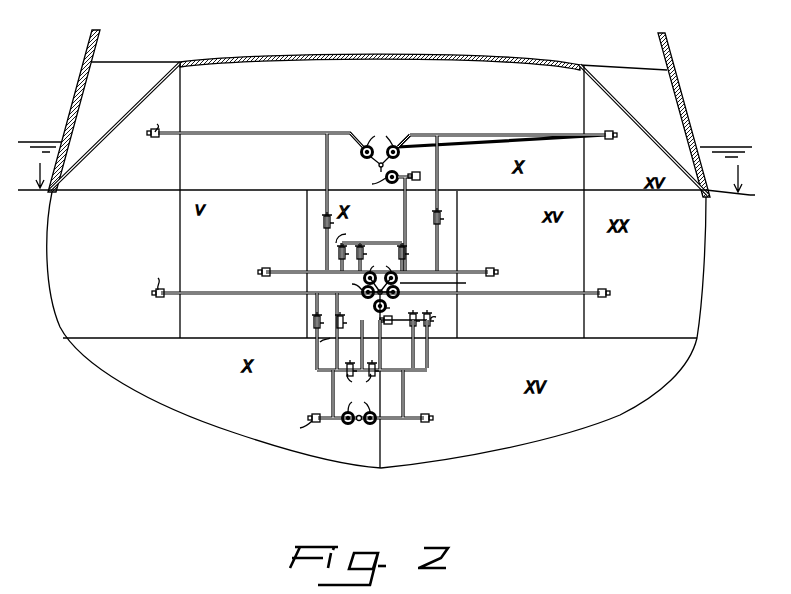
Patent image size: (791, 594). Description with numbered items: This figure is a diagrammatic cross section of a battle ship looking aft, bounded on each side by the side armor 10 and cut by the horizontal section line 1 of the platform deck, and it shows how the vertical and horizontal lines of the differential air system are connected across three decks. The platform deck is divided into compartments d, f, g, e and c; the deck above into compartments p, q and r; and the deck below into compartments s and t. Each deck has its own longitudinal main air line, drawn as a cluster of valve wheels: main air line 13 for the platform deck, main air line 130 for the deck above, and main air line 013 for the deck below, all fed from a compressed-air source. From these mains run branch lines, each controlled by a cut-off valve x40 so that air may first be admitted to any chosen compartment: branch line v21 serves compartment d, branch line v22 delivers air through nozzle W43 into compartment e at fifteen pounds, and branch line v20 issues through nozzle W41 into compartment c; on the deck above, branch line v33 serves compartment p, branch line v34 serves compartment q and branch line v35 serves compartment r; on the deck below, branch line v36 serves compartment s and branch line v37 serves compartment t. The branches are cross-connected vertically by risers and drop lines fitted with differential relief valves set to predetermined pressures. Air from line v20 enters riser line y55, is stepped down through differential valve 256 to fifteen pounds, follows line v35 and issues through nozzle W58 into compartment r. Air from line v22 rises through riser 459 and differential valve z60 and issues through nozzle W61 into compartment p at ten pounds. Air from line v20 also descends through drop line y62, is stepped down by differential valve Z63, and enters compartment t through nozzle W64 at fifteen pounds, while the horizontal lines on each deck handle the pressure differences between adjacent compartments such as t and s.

The side armor 10 is at (86, 70).
The section line 1— 1 is at (389, 174).
The branch line for compartment q v34 is at (236, 133).
The branch line for compartment r v35 is at (474, 134).
The branch line for compartment p v33 is at (397, 172).
The main air line of the deck above 130 is at (379, 167).
The nozzle w61 W61 is at (426, 174).
The nozzle w58 W58 is at (612, 140).
The differential valve z56 256 is at (436, 216).
The riser y59 459 is at (412, 229).
The differential valve z60 is at (398, 256).
The cut-off valve x x40 is at (382, 281).
The branch line for compartment e v22 is at (466, 270).
The nozzle w43 W43 is at (490, 267).
The riser line y55 is at (446, 284).
The branch line for compartment c v20 is at (474, 297).
The nozzle w41 W41 is at (603, 298).
The branch line for compartment d v21 is at (270, 296).
The main air line of the platform deck 13 is at (381, 310).
The differential valve z63 Z63 is at (386, 322).
The drop line y62 is at (369, 341).
The branch line for compartment s v36 is at (326, 410).
The main air line of the deck below 013 is at (362, 424).
The branch line for compartment t v37 is at (392, 422).
The nozzle w64 W64 is at (432, 416).
The compartment p is at (420, 88).
The compartment q is at (118, 170).
The compartment r is at (610, 183).
The compartment d is at (112, 249).
The compartment f is at (241, 220).
The compartment g is at (368, 208).
The compartment e is at (512, 220).
The compartment c is at (659, 266).
The compartment s is at (174, 375).
The compartment t is at (491, 367).